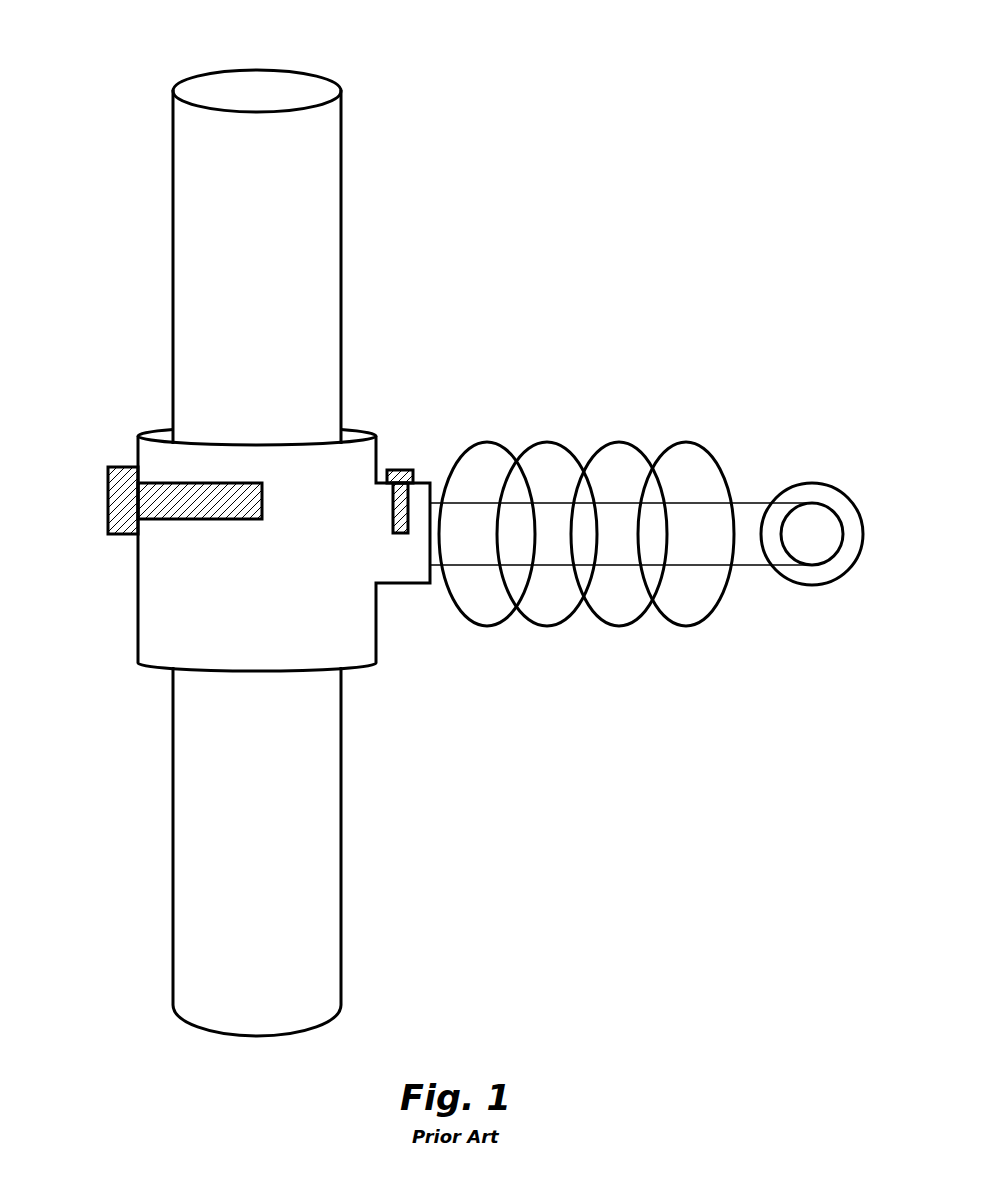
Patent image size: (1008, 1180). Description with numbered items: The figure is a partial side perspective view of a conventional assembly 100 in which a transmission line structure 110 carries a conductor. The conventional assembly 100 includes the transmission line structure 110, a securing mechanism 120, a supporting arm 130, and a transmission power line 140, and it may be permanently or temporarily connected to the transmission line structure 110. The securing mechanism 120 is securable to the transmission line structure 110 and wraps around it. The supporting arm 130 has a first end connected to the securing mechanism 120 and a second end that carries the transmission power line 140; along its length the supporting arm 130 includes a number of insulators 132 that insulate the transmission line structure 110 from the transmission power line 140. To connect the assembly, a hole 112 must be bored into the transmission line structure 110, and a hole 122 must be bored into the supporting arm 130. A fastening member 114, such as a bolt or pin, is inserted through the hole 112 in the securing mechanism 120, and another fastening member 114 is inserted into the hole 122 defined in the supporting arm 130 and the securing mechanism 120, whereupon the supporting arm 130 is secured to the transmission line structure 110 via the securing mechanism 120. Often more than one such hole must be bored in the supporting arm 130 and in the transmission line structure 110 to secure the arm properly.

The conventional assembly 100 is at (683, 138).
The transmission line structure 110 is at (341, 90).
The hole 112 is at (165, 483).
The fastening member 114 is at (108, 535).
The securing mechanism 120 is at (377, 665).
The hole 122 is at (406, 510).
The supporting arm 130 is at (621, 547).
The insulators 132 is at (709, 467).
The transmission power line 140 is at (813, 566).